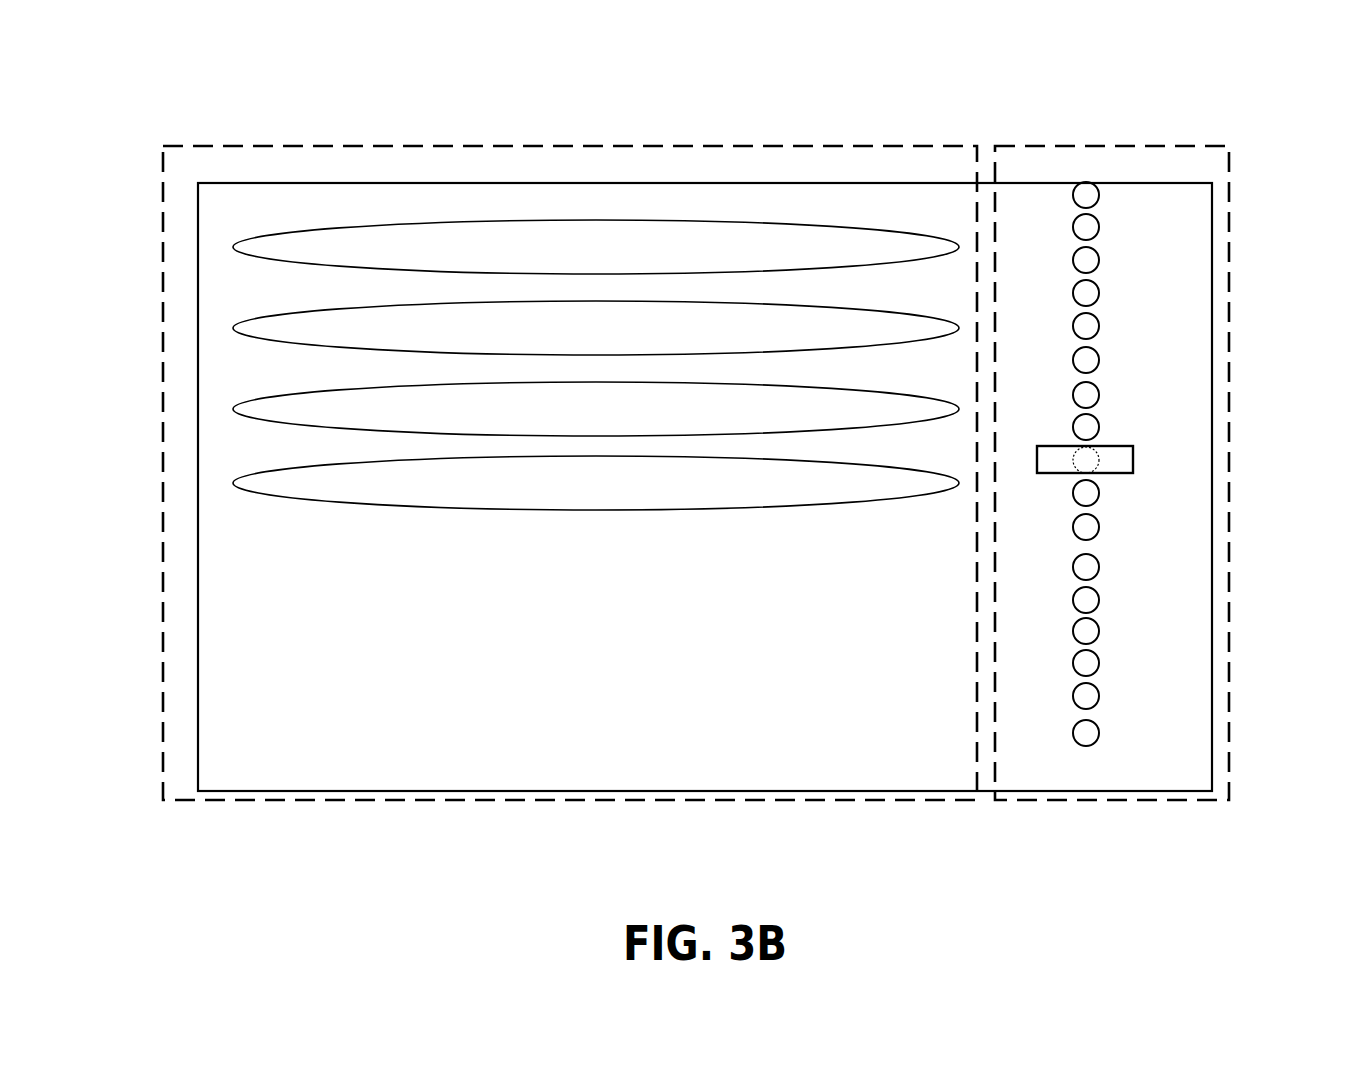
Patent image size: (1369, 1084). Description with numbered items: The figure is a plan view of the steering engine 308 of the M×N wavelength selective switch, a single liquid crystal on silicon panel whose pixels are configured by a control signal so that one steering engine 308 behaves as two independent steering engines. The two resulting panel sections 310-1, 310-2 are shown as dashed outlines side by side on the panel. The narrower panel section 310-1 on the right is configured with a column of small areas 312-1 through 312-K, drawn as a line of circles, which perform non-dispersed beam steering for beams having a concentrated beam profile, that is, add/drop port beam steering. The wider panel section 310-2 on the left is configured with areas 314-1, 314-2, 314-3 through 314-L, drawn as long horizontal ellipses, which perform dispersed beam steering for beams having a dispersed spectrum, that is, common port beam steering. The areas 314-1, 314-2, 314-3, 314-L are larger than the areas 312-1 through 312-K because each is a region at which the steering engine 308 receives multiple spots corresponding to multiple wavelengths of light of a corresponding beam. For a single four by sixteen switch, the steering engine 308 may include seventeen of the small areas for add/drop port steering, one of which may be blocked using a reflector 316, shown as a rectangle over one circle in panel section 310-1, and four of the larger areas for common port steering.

The steering engine 308 is at (197, 69).
The panel section 310-1 is at (1163, 449).
The panel section 310-2 is at (570, 449).
The area 312-1 is at (1093, 369).
The area 312-K is at (1197, 630).
The area 314-1 is at (596, 247).
The area 314-2 is at (596, 328).
The area 314-3 is at (596, 409).
The area 314-L is at (596, 483).
The reflector 316 is at (1133, 460).